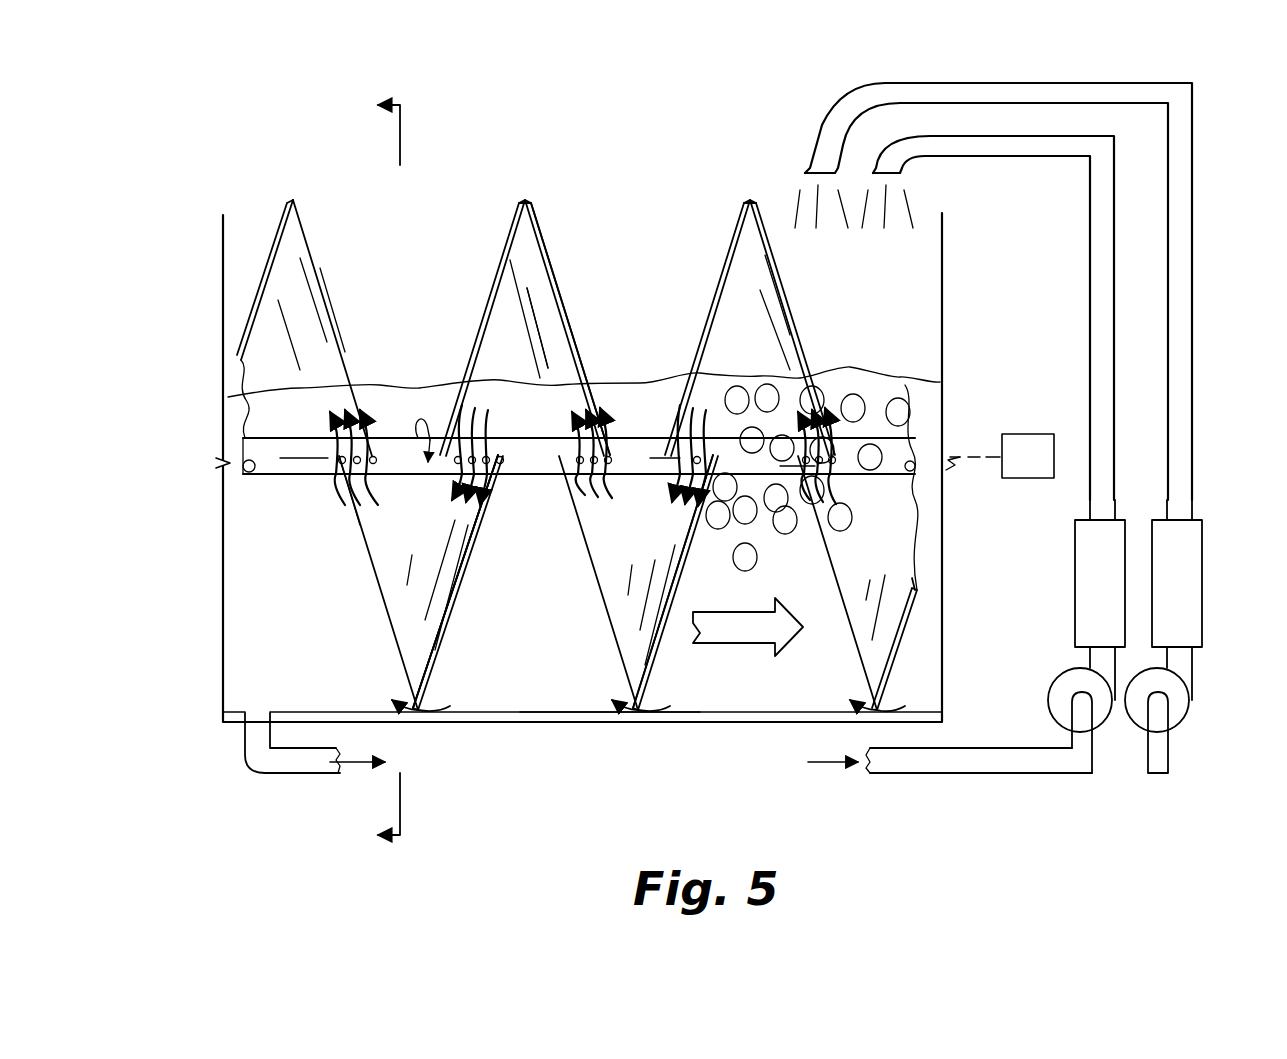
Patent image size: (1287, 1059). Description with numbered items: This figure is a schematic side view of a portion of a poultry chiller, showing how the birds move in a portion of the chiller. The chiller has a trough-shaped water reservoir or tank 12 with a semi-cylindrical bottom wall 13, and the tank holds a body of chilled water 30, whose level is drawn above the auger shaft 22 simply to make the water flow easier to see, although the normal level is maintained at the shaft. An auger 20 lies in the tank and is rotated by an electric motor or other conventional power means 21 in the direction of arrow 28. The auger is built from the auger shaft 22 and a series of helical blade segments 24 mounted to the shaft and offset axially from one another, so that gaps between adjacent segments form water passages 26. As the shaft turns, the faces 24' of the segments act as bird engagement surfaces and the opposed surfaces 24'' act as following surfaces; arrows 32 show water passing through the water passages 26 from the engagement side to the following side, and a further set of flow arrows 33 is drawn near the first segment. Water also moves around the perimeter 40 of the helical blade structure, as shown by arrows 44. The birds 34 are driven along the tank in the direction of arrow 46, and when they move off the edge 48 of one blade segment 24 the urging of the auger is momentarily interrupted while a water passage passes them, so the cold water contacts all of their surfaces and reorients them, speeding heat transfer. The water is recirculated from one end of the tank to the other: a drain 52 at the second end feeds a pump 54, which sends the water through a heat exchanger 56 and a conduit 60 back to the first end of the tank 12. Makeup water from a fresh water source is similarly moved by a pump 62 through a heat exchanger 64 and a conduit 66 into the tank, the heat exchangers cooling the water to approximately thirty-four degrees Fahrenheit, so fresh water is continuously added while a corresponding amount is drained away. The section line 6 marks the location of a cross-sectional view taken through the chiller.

The section line 6- 6 is at (373, 471).
The tank 12 is at (720, 718).
The semi-cylindrical bottom wall 13 is at (515, 716).
The auger 20 is at (262, 255).
The electric motor or other conventional power means 21 is at (1030, 432).
The auger shaft 22 is at (288, 447).
The helical blade segments 24 is at (573, 329).
The bird engagement surfaces 24' is at (630, 484).
The following surfaces 24'' is at (464, 581).
The water passages 26 is at (358, 476).
The arrow indicating direction of rotation 28 is at (425, 420).
The water 30 is at (642, 383).
The arrows illustrating water movement 32 is at (475, 440).
The fluid jets 33 is at (358, 432).
The bird 34 is at (765, 394).
The perimeter of the auger blade segments 40 is at (532, 198).
The arrows illustrating water movement around the perimeter 44 is at (436, 703).
The arrow indicating direction of bird movement 46 is at (742, 632).
The edge of the auger blade segment 48 is at (496, 450).
The drain 52 is at (290, 770).
The pump 54 is at (1062, 690).
The heat exchanger 56 is at (1076, 597).
The conduit 60 is at (1098, 232).
The pump 62 is at (1182, 702).
The heat exchanger 64 is at (1192, 628).
The conduit 66 is at (1192, 432).